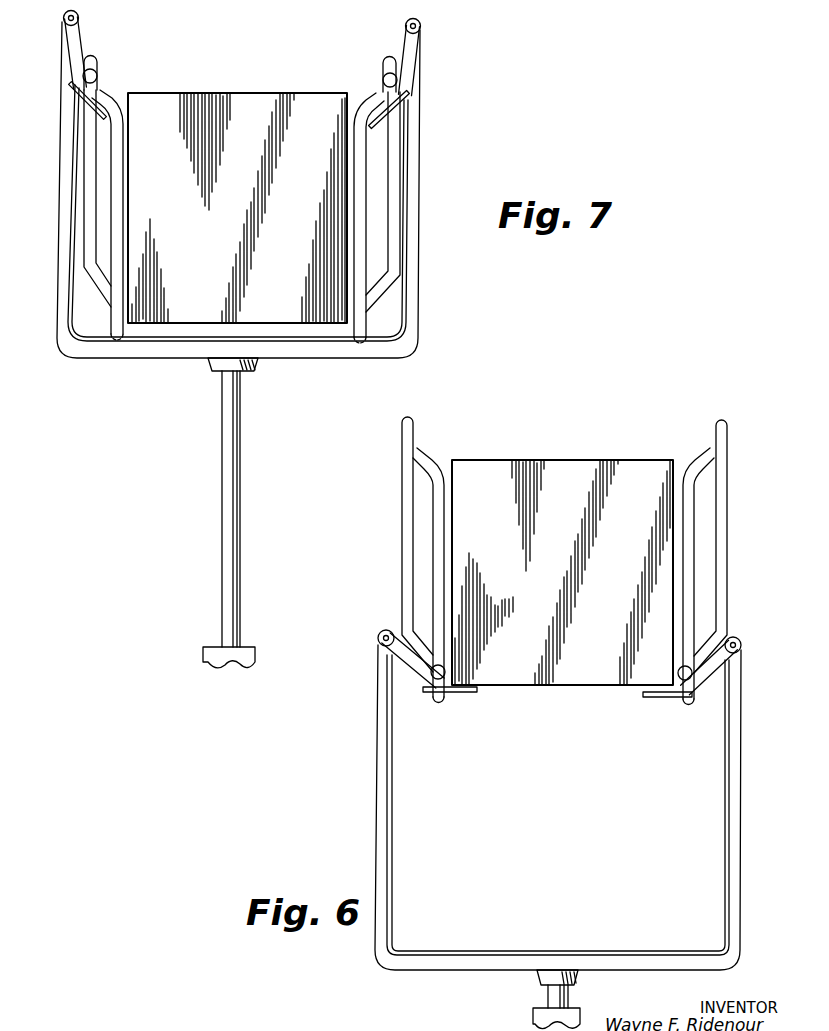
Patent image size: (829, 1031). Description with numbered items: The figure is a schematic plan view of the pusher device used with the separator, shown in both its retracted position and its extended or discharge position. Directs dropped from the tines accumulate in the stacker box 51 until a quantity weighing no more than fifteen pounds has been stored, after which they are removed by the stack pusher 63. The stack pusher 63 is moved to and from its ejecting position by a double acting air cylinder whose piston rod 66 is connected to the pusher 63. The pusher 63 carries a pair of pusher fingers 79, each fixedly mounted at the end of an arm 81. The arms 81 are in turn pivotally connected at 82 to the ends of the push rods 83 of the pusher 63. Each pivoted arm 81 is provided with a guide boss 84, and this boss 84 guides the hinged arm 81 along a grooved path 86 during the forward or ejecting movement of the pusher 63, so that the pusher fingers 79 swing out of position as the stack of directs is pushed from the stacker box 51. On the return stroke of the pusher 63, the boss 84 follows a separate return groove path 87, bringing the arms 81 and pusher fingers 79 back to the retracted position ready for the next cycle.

In FIG. 7, the stacker box 51 is at (233, 226).
In FIG. 6, the stacker box 51 is at (561, 607).
In FIG. 7, the stack pusher 63 is at (292, 352).
In FIG. 6, the stack pusher 63 is at (645, 958).
In FIG. 7, the piston rod 66 is at (236, 510).
In FIG. 7, the pusher fingers 79 is at (97, 106).
In FIG. 6, the pusher fingers 79 is at (462, 693).
In FIG. 7, the arms 81 is at (78, 42).
In FIG. 6, the arms 81 is at (700, 685).
In FIG. 7, the pivotal connection 82 is at (79, 18).
In FIG. 6, the pivotal connection 82 is at (740, 641).
In FIG. 7, the push rods 83 is at (68, 243).
In FIG. 6, the push rods 83 is at (388, 812).
In FIG. 7, the guide boss 84 is at (97, 75).
In FIG. 6, the guide boss 84 is at (443, 672).
In FIG. 7, the grooved path 86 is at (95, 163).
In FIG. 6, the grooved path 86 is at (405, 585).
In FIG. 7, the return groove path 87 is at (118, 212).
In FIG. 6, the return groove path 87 is at (692, 532).